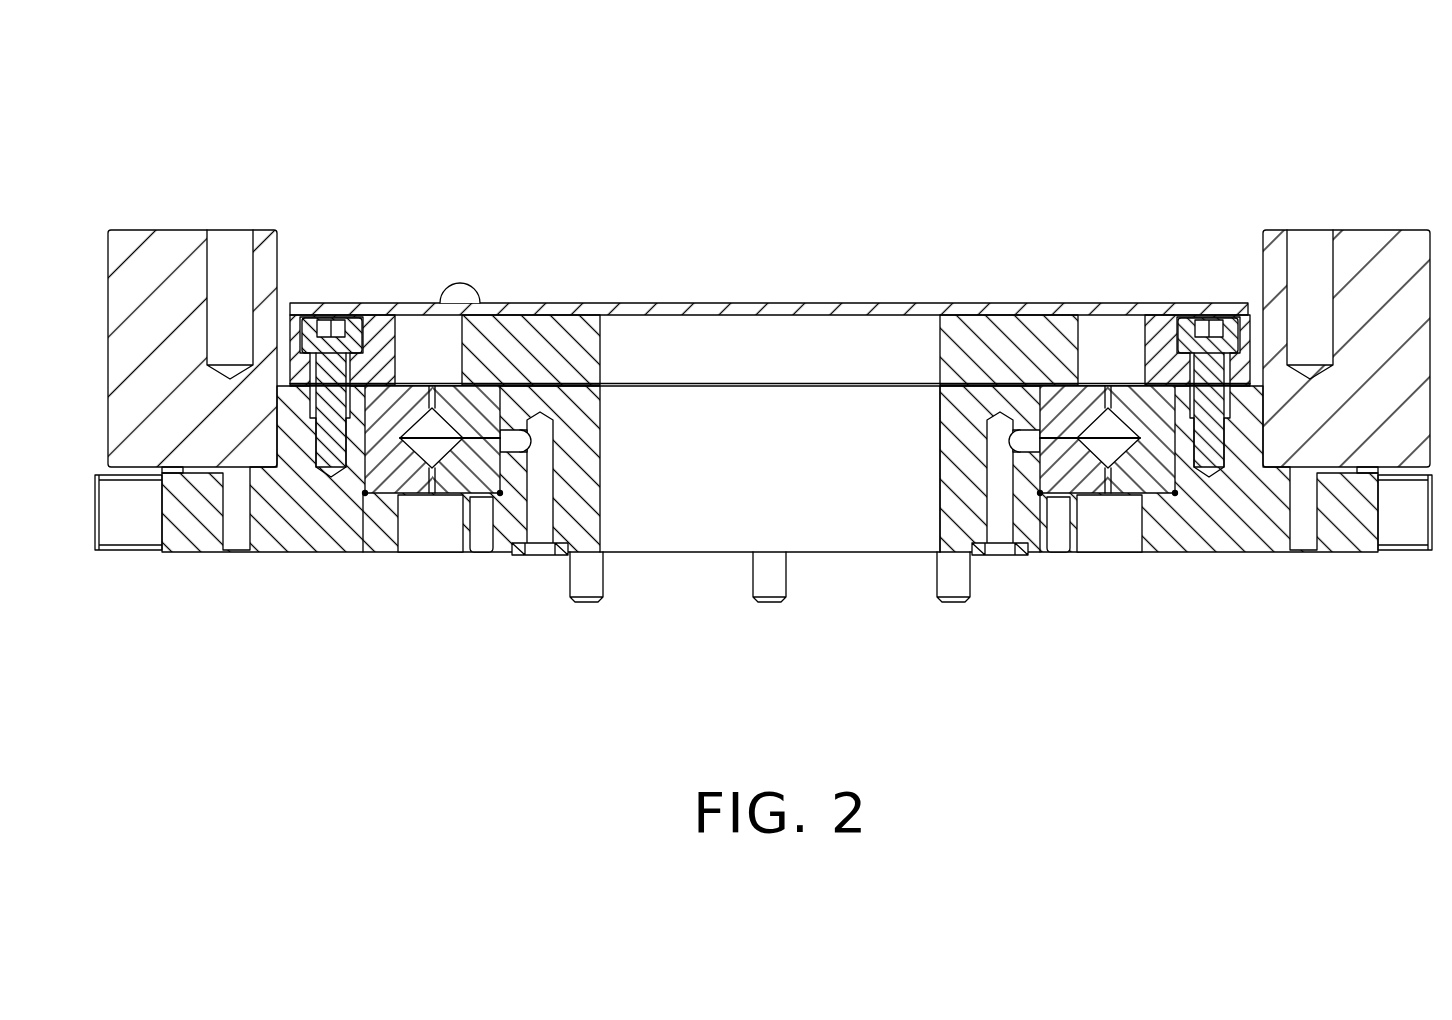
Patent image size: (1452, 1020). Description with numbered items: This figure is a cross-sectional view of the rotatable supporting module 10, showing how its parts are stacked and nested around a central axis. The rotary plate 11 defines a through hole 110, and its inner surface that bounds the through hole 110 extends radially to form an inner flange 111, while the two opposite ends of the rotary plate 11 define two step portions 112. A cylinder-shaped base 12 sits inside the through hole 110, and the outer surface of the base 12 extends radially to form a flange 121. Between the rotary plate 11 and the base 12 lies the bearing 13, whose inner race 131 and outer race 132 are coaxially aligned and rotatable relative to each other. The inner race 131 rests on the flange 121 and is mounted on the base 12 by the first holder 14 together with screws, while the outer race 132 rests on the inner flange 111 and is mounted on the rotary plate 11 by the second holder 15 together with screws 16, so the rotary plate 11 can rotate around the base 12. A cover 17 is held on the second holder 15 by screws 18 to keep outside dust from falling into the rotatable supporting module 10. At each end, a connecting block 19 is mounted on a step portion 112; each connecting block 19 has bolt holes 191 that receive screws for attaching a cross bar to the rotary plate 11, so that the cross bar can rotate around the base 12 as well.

The rotatable supporting module 10 is at (789, 77).
The rotary plate 11 is at (763, 529).
The through hole 110 is at (1122, 532).
The inner flange 111 is at (386, 497).
The step portions 112 is at (1332, 478).
The base 12 is at (963, 478).
The flange 121 is at (1052, 532).
The bearing 13 is at (770, 535).
The inner race 131 is at (473, 497).
The outer race 132 is at (410, 497).
The first holder 14 is at (534, 335).
The second holder 15 is at (387, 343).
The screws 16 is at (326, 325).
The cover 17 is at (1049, 305).
The screws 18 is at (462, 300).
The connecting blocks 19 is at (754, 310).
The bolt holes 191 is at (1298, 240).